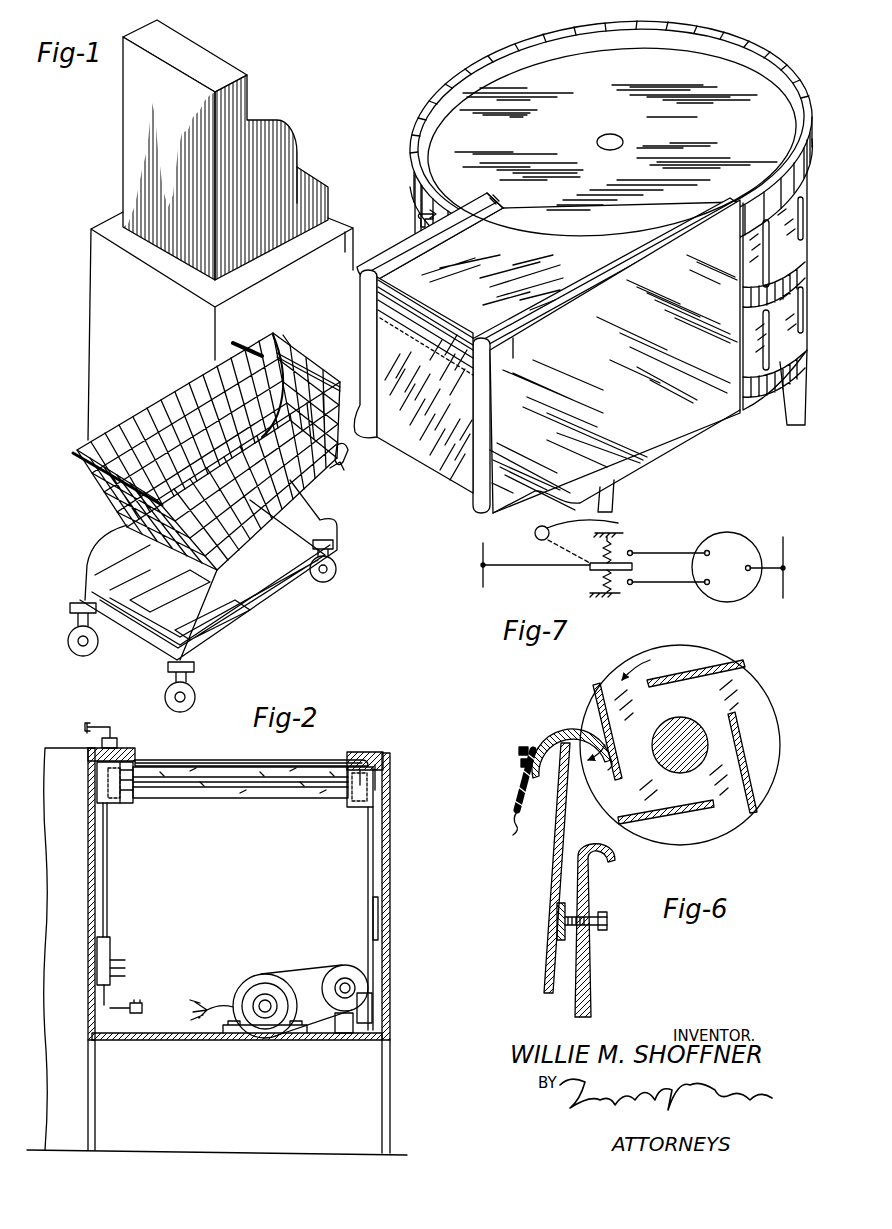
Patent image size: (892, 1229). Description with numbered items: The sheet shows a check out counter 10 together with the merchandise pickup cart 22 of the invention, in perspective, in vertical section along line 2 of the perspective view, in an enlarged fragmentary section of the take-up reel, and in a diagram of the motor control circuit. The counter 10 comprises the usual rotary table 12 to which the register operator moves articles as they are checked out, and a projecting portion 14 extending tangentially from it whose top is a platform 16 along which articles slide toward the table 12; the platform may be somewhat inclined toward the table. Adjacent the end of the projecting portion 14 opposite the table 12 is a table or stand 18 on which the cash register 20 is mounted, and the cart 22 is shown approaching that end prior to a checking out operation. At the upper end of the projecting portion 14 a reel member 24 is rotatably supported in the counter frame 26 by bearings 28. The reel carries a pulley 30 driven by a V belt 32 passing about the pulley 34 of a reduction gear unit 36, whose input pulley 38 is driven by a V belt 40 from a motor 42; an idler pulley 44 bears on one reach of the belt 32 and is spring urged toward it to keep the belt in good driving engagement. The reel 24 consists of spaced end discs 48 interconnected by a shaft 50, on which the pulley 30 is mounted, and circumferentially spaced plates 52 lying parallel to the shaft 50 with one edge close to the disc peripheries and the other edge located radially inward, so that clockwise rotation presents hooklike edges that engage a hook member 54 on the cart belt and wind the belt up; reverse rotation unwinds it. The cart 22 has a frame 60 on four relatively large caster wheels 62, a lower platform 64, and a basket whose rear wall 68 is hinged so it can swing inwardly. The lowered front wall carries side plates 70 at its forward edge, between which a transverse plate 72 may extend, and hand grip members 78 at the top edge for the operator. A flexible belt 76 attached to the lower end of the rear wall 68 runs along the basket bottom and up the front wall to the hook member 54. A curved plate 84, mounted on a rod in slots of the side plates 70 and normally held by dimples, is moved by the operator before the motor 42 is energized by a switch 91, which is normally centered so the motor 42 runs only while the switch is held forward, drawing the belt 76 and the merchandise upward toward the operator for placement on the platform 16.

In FIG. 1, the section line 2 is at (348, 242).
In FIG. 1, the check out counter 10 is at (786, 33).
In FIG. 1, the rotary table 12 is at (634, 80).
In FIG. 1, the projecting portion of the check out counter 14 is at (728, 418).
In FIG. 2, the projecting portion of the check out counter 14 is at (402, 806).
In FIG. 1, the platform 16 is at (548, 272).
In FIG. 2, the platform 16 is at (222, 760).
In FIG. 1, the table or stand 18 is at (338, 230).
In FIG. 1, the cash register 20 is at (305, 180).
In FIG. 1, the merchandise pickup cart 22 is at (330, 470).
In FIG. 1, the reel member 24 is at (440, 310).
In FIG. 6, the reel member 24 is at (717, 660).
In FIG. 2, the reel member 24 is at (278, 800).
In FIG. 2, the frame 26 is at (95, 870).
In FIG. 2, the bearings 28 is at (380, 753).
In FIG. 2, the pulley 30 is at (390, 772).
In FIG. 2, the V belt 32 is at (362, 850).
In FIG. 2, the pulley 34 is at (375, 1020).
In FIG. 2, the reduction gear unit 36 is at (345, 1043).
In FIG. 2, the input pulley 38 is at (345, 965).
In FIG. 2, the V belt 40 is at (316, 970).
In FIG. 7, the motor 42 is at (737, 543).
In FIG. 2, the motor 42 is at (268, 980).
In FIG. 2, the idler pulley 44 is at (378, 908).
In FIG. 6, the end discs 48 is at (767, 760).
In FIG. 2, the end discs 48 is at (135, 806).
In FIG. 6, the shaft 50 is at (703, 732).
In FIG. 2, the shaft 50 is at (212, 796).
In FIG. 6, the plates 52 is at (740, 733).
In FIG. 2, the plates 52 is at (180, 800).
In FIG. 6, the hook member 54 is at (570, 732).
In FIG. 1, the frame 60 is at (250, 612).
In FIG. 1, the caster wheels 62 is at (336, 577).
In FIG. 1, the lower platform 64 is at (275, 597).
In FIG. 1, the rear wall 68 is at (108, 505).
In FIG. 1, the side plates 70 is at (282, 333).
In FIG. 6, the transverse plate 72 is at (566, 830).
In FIG. 1, the flexible belt 76 is at (306, 362).
In FIG. 6, the flexible belt 76 is at (522, 799).
In FIG. 1, the hand grip members 78 is at (262, 342).
In FIG. 1, the curved plate 84 is at (290, 346).
In FIG. 1, the switch 91 is at (424, 216).
In FIG. 7, the switch 91 is at (593, 557).
In FIG. 2, the switch 91 is at (114, 740).